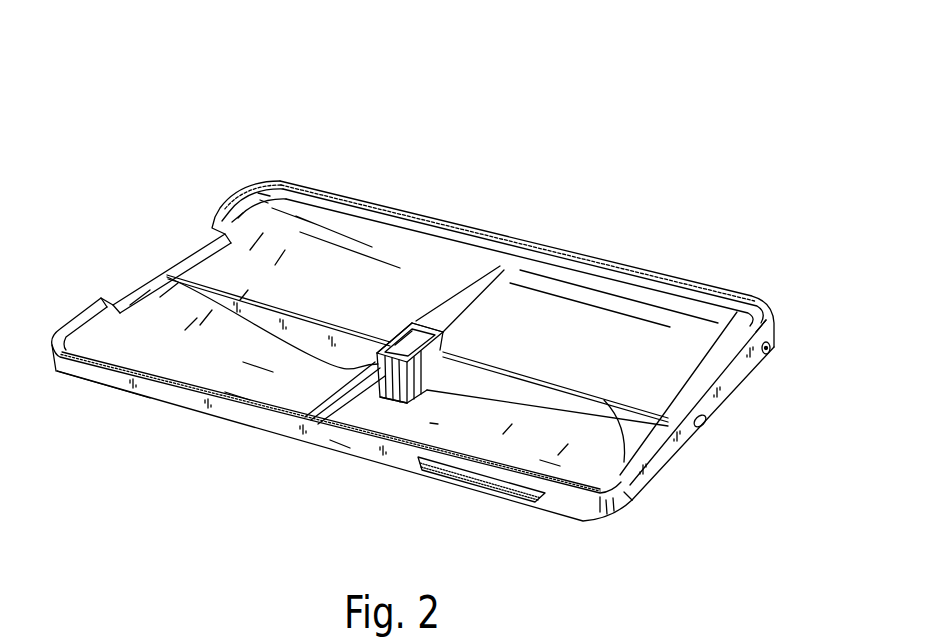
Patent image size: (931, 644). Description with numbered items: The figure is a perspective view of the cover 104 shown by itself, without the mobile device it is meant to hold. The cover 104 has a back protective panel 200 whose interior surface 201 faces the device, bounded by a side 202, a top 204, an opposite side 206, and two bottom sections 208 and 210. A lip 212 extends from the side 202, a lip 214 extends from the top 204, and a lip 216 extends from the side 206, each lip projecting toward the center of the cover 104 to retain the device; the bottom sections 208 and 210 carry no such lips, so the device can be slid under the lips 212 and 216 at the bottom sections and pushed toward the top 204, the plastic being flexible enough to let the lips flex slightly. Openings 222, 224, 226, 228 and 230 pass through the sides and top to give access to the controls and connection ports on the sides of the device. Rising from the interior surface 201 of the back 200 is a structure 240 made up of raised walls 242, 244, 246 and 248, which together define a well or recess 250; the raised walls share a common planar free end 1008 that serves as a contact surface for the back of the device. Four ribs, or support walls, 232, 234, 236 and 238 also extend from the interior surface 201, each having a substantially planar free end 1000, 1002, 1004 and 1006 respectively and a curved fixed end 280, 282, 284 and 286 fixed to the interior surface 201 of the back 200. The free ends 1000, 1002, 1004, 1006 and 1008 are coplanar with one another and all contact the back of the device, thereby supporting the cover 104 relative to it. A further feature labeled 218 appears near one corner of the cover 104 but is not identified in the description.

The cover 104 is at (502, 88).
The back protective panel 200 is at (552, 300).
The interior surface 201 is at (557, 472).
The side 202 is at (652, 288).
The top 204 is at (743, 377).
The side 206 is at (335, 443).
The bottom section 208 is at (100, 293).
The bottom section 210 is at (240, 213).
The lip 212 is at (333, 190).
The lip 214 is at (768, 335).
The lip 216 is at (158, 377).
The bottom-left corner 218 is at (75, 313).
The opening 222 is at (155, 276).
The opening 224 is at (473, 498).
The opening 226 is at (625, 503).
The opening 228 is at (705, 423).
The opening 230 is at (772, 355).
The rib 232 is at (530, 396).
The rib 234 is at (275, 307).
The rib 236 is at (463, 297).
The rib 238 is at (368, 378).
The structure 240 is at (427, 397).
The raised wall 242 is at (445, 328).
The raised wall 244 is at (410, 322).
The raised wall 246 is at (390, 327).
The raised wall 248 is at (405, 393).
The well or recess 250 is at (422, 338).
The curved fixed end 280 is at (646, 463).
The curved fixed end 282 is at (162, 318).
The curved fixed end 284 is at (490, 285).
The curved fixed end 286 is at (368, 445).
The free end 1000 is at (610, 393).
The free end 1002 is at (213, 288).
The free end 1004 is at (498, 266).
The free end 1006 is at (320, 412).
The free end 1008 is at (365, 352).